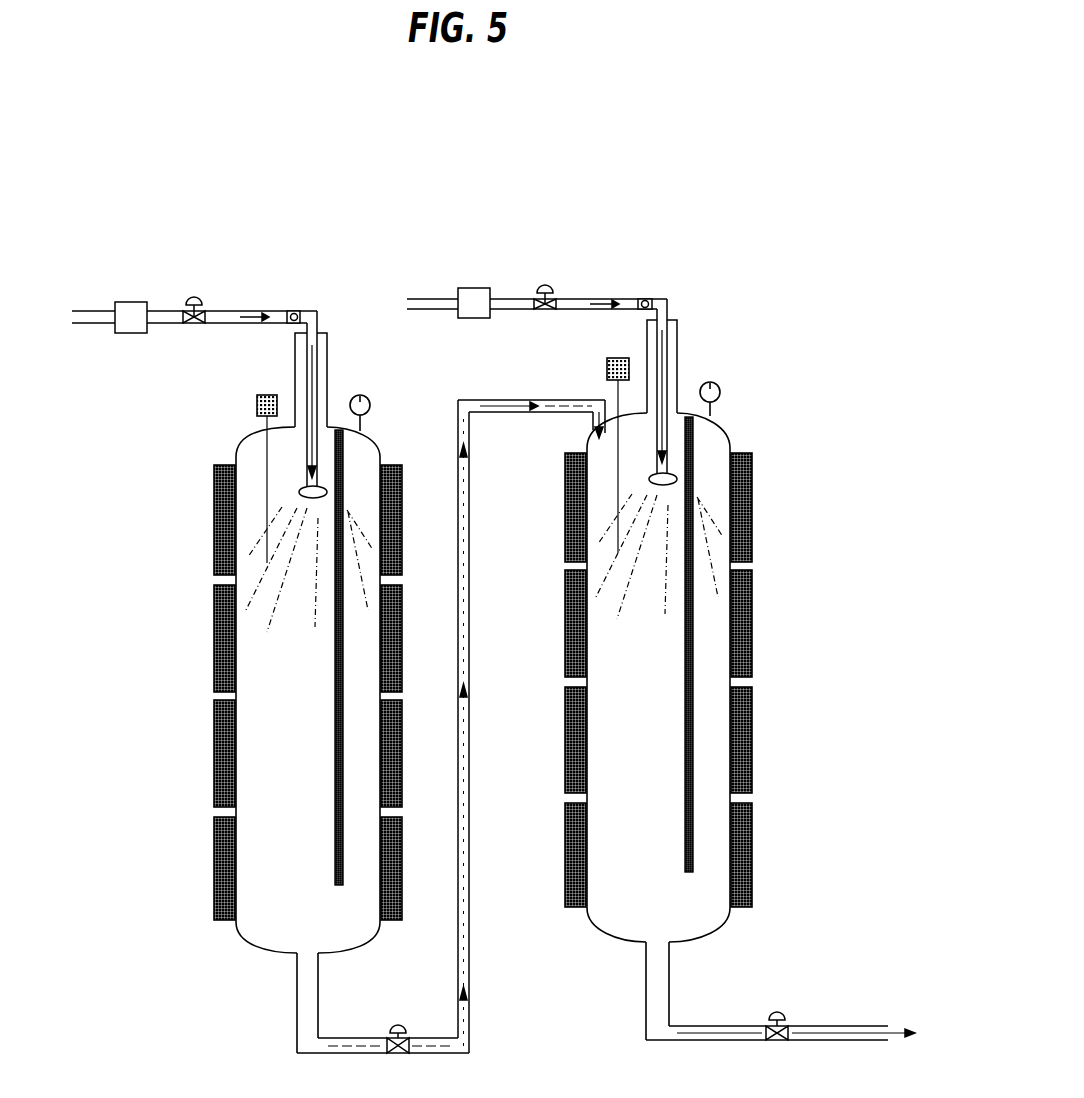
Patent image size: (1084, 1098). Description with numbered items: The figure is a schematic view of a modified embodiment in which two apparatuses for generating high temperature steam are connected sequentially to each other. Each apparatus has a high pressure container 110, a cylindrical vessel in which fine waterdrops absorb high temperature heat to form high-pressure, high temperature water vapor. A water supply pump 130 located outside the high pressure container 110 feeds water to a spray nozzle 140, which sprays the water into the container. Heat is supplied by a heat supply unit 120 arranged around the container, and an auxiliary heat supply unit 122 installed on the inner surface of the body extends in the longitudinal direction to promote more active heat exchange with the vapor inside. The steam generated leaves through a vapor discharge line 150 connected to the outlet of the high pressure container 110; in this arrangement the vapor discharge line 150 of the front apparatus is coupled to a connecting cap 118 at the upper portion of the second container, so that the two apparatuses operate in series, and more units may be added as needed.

The high pressure container 110 is at (307, 729).
The connecting cap 118 is at (598, 432).
The heat supply unit 120 is at (214, 627).
The auxiliary heat supply unit 122 is at (693, 643).
The water supply pump 130 is at (134, 302).
The spray nozzle 140 is at (298, 492).
The vapor discharge line 150 is at (469, 822).